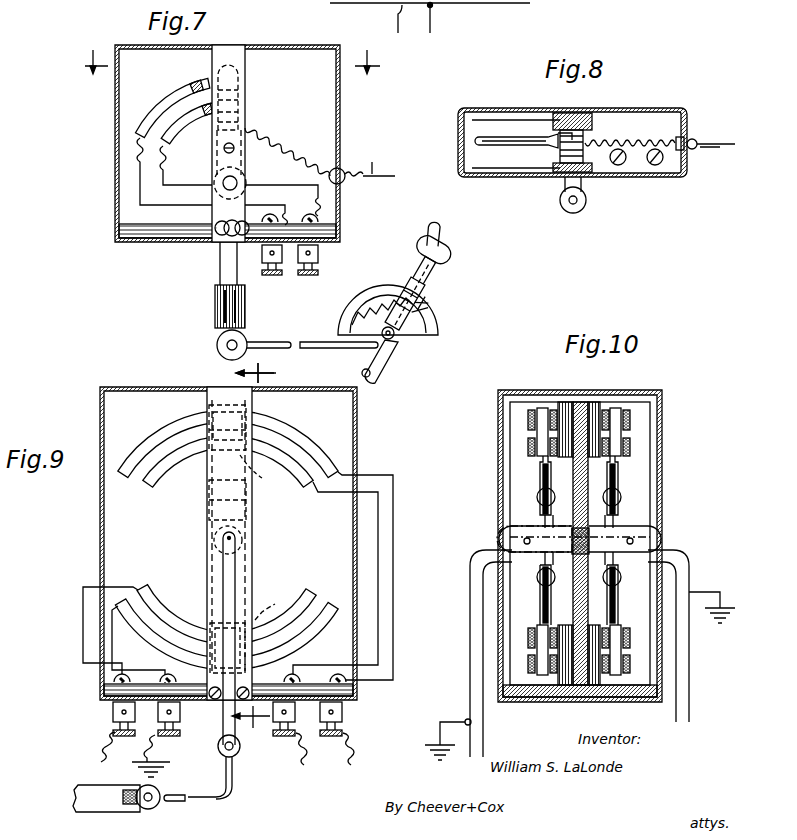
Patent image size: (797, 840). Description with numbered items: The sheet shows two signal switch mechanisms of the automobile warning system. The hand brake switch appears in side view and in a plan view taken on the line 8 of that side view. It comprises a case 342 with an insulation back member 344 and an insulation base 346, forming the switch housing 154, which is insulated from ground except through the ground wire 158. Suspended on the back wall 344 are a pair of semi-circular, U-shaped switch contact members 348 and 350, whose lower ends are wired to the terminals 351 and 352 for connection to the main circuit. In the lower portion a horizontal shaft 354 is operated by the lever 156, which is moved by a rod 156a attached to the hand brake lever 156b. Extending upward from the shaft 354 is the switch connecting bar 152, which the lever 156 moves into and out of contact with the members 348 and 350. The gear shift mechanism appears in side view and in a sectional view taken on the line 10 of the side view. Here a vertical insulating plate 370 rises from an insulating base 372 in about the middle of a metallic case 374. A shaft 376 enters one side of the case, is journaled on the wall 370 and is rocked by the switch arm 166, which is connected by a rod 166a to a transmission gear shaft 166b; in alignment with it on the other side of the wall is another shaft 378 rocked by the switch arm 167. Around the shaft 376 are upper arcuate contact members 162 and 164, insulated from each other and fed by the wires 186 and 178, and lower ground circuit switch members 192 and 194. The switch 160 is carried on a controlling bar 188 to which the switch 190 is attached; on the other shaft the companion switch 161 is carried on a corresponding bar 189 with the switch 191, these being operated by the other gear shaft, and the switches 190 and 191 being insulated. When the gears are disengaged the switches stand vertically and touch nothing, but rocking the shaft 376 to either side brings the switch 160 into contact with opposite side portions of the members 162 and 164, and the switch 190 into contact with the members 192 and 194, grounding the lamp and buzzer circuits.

In FIG. 7, the section line 8— 8 is at (226, 62).
In FIG. 7, the section line 10— 10 is at (258, 367).
In FIG. 9, the section line 10— 10 is at (253, 556).
In FIG. 7, the switch connecting bar 152 is at (238, 72).
In FIG. 8, the switch connecting bar 152 is at (585, 140).
In FIG. 7, the switch housing 154 is at (340, 103).
In FIG. 8, the switch housing 154 is at (688, 167).
In FIG. 7, the lever 156 is at (225, 274).
In FIG. 8, the lever 156 is at (587, 200).
In FIG. 7, the rod 156a is at (283, 342).
In FIG. 7, the hand brake lever 156b is at (380, 354).
In FIG. 7, the ground wire 158 is at (320, 163).
In FIG. 8, the ground wire 158 is at (721, 140).
In FIG. 9, the ground wire 158 is at (100, 748).
In FIG. 9, the switch 160 is at (254, 470).
In FIG. 10, the switch 160 is at (545, 430).
In FIG. 10, the switch 161 is at (614, 430).
In FIG. 9, the switch member 162 is at (143, 442).
In FIG. 10, the switch member 162 is at (538, 410).
In FIG. 9, the switch member 164 is at (160, 470).
In FIG. 10, the switch member 164 is at (556, 456).
In FIG. 9, the switch arm 166 is at (222, 735).
In FIG. 10, the switch arm 166 is at (484, 722).
In FIG. 9, the rod 166a is at (232, 798).
In FIG. 9, the gear shaft 166b is at (78, 792).
In FIG. 10, the switch arm 167 is at (690, 703).
In FIG. 9, the wire 178 is at (282, 756).
In FIG. 9, the wire 186 is at (338, 722).
In FIG. 9, the controlling bar 188 is at (230, 495).
In FIG. 10, the controlling bar 188 is at (545, 480).
In FIG. 10, the contact finger 189 is at (616, 480).
In FIG. 9, the switch 190 is at (262, 610).
In FIG. 10, the switch 190 is at (545, 650).
In FIG. 10, the switch 191 is at (616, 642).
In FIG. 9, the ground circuit switch member 192 is at (148, 590).
In FIG. 10, the ground circuit switch member 192 is at (522, 626).
In FIG. 9, the ground circuit switch member 194 is at (138, 630).
In FIG. 10, the ground circuit switch member 194 is at (556, 676).
In FIG. 8, the case 342 is at (472, 176).
In FIG. 8, the insulation back member 344 is at (590, 112).
In FIG. 7, the insulation base 346 is at (142, 240).
In FIG. 7, the switch contact member 348 is at (150, 112).
In FIG. 8, the switch contact member 348 is at (518, 148).
In FIG. 7, the switch contact member 350 is at (176, 128).
In FIG. 7, the terminal 351 is at (286, 262).
In FIG. 7, the terminal 352 is at (322, 258).
In FIG. 7, the horizontal shaft 354 is at (236, 183).
In FIG. 10, the vertical insulating plate 370 is at (575, 500).
In FIG. 10, the insulating base 372 is at (566, 700).
In FIG. 10, the metallic case 374 is at (576, 400).
In FIG. 9, the shaft 376 is at (238, 540).
In FIG. 10, the shaft 376 is at (505, 530).
In FIG. 10, the shaft 378 is at (660, 532).